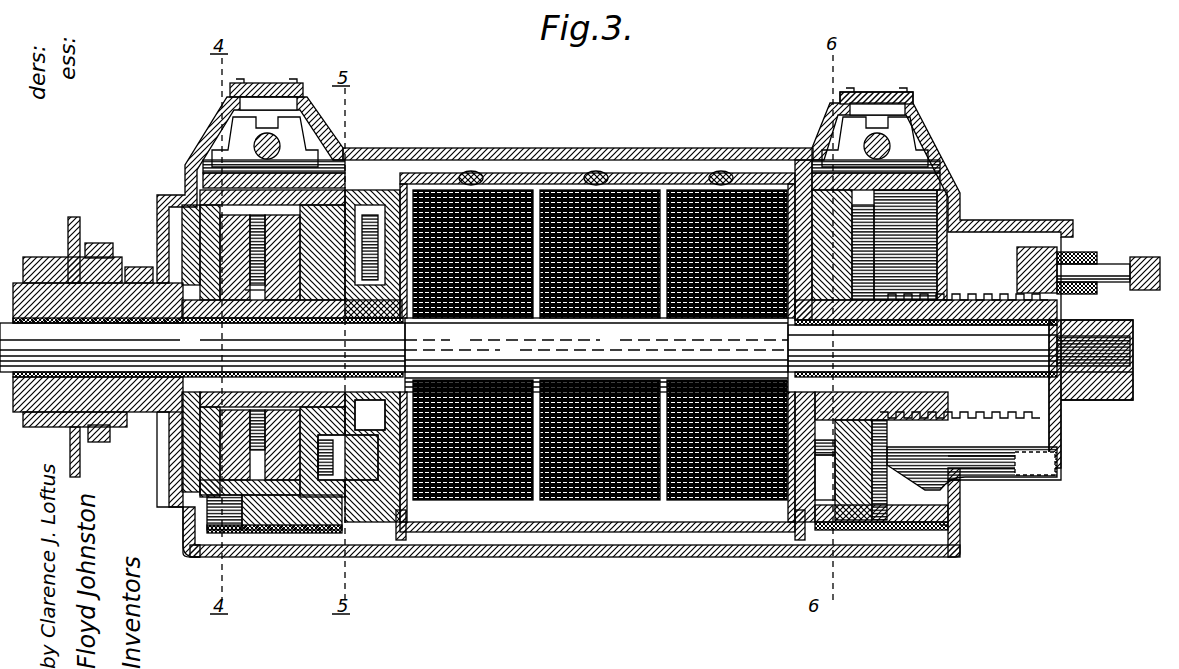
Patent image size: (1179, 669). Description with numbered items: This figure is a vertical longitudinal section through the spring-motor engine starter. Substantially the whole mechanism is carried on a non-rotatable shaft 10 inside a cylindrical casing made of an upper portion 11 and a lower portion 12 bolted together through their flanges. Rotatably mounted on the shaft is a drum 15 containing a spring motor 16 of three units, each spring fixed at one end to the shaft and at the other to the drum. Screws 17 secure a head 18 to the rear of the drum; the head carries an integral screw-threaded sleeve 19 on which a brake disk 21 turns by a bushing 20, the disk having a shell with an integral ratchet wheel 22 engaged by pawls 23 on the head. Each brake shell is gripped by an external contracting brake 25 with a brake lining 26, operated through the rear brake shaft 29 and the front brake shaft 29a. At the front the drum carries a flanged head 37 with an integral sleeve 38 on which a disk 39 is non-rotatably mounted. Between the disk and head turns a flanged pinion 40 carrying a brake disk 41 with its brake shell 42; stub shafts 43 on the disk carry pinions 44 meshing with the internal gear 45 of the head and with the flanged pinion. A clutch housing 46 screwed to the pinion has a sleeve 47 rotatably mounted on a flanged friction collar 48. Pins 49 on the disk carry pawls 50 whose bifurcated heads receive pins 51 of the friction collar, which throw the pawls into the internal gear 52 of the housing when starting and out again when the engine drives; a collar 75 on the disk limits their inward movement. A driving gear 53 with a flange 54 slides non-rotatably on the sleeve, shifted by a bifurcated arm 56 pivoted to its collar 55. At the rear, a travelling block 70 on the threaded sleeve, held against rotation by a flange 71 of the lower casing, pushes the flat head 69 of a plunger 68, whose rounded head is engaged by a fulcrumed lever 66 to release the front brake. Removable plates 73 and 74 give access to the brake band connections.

The shaft 10 is at (596, 355).
The upper casing portion 11 is at (543, 148).
The lower casing portion 12 is at (592, 557).
The drum 15 is at (640, 173).
The spring motor 16 is at (476, 190).
The bolts or screws 17 is at (800, 540).
The head 18 is at (803, 173).
The sleeve 19 is at (952, 300).
The bushing 20 is at (959, 348).
The brake disk 21 is at (895, 178).
The ratchet wheel 22 is at (879, 245).
The pawls 23 is at (830, 478).
The external contracting brake 25 is at (880, 530).
The brake lining 26 is at (945, 530).
The brake shaft 29 is at (890, 146).
The front brake shaft 29a is at (280, 146).
The flanged head 37 is at (403, 500).
The sleeve 38 is at (362, 318).
The disk 39 is at (262, 300).
The flanged pinion 40 is at (338, 300).
The brake disk 41 is at (340, 173).
The brake shell 42 is at (290, 533).
The pins or stub shafts 43 is at (339, 452).
The pinion 44 is at (400, 320).
The internal gear 45 is at (372, 500).
The clutch housing 46 is at (226, 530).
The sleeve or collar 47 is at (202, 347).
The flanged friction collar 48 is at (218, 323).
The pins 49 is at (190, 440).
The pawl 50 is at (245, 257).
The pins 51 is at (215, 475).
The internal gear 52 is at (205, 497).
The driving gear 53 is at (40, 265).
The flange 54 is at (76, 222).
The collar 55 is at (138, 267).
The bifurcated arm 56 is at (100, 243).
The lever 66 is at (1145, 286).
The plunger 68 is at (1108, 270).
The flat head 69 is at (1070, 252).
The travelling block 70 is at (1017, 260).
The flange 71 is at (975, 455).
The removable plate 73 is at (272, 83).
The removable plate 74 is at (880, 92).
The flange or collar 75 is at (252, 323).